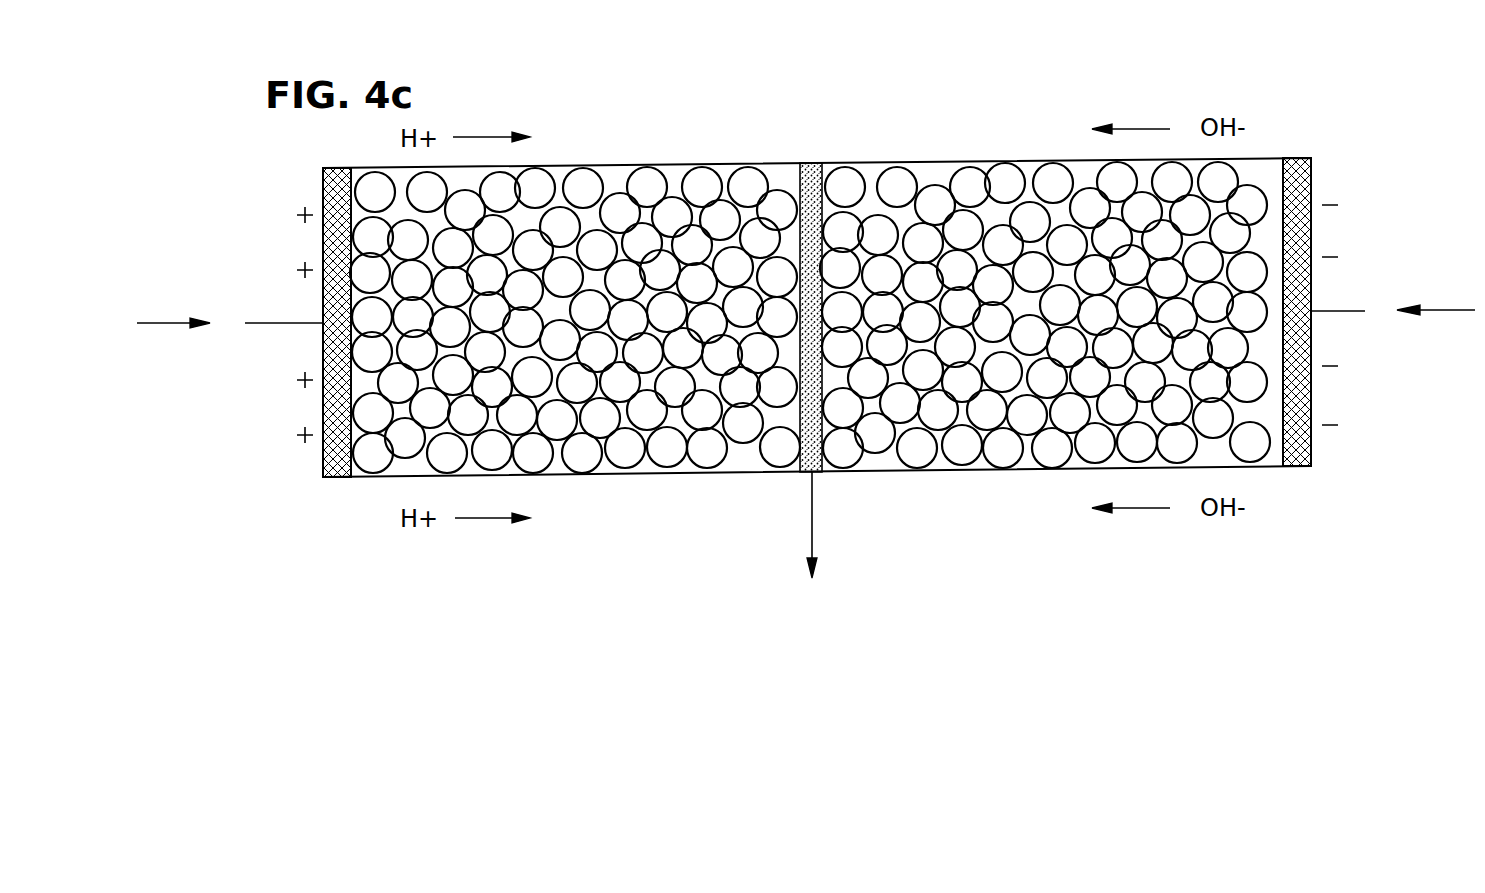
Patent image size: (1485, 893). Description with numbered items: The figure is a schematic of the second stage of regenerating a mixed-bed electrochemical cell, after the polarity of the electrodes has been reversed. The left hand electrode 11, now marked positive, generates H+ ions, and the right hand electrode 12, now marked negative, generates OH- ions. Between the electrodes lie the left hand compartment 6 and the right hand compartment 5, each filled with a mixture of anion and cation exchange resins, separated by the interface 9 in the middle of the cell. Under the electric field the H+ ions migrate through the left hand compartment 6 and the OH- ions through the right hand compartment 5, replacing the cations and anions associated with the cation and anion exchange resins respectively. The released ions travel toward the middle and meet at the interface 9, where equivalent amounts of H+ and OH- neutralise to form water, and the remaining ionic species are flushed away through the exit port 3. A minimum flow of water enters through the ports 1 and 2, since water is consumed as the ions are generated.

The port 1 is at (230, 310).
The port 2 is at (1393, 296).
The exit port 3 is at (812, 544).
The right hand compartment 5 is at (1077, 172).
The left hand compartment 6 is at (607, 177).
The interface 9 is at (820, 471).
The left hand electrode 11 is at (323, 193).
The right hand electrode 12 is at (1311, 180).